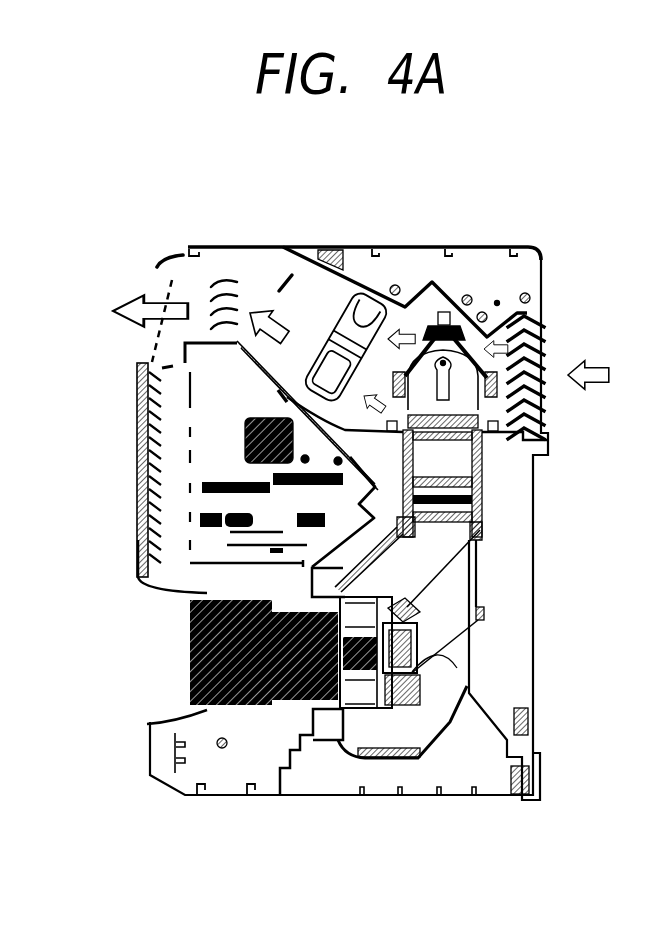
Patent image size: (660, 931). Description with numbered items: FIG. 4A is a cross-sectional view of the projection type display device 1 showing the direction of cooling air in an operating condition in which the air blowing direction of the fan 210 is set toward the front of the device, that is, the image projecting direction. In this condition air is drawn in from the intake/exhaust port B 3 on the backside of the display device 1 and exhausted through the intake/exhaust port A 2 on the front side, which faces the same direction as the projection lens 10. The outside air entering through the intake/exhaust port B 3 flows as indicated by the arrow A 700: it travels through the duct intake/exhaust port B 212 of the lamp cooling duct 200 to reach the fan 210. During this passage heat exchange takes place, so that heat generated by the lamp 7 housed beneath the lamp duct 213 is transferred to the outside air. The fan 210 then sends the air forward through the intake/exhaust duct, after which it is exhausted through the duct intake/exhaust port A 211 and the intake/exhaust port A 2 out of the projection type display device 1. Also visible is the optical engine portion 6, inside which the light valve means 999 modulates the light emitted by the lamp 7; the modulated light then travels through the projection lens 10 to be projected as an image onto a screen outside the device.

The projection type display device 1 is at (507, 668).
The intake/exhaust port A 2 is at (137, 283).
The intake/exhaust port B 3 is at (553, 370).
The optical engine portion 6 is at (392, 578).
The lamp 7 is at (422, 345).
The projection lens 10 is at (190, 669).
The lamp cooling duct 200 is at (305, 290).
The fan 210 is at (362, 300).
The duct intake/exhaust port A 211 is at (148, 338).
The duct intake/exhaust port B 212 is at (542, 253).
The lamp duct 213 is at (485, 313).
The arrow A 700 is at (263, 313).
The light valve means 999 is at (428, 737).